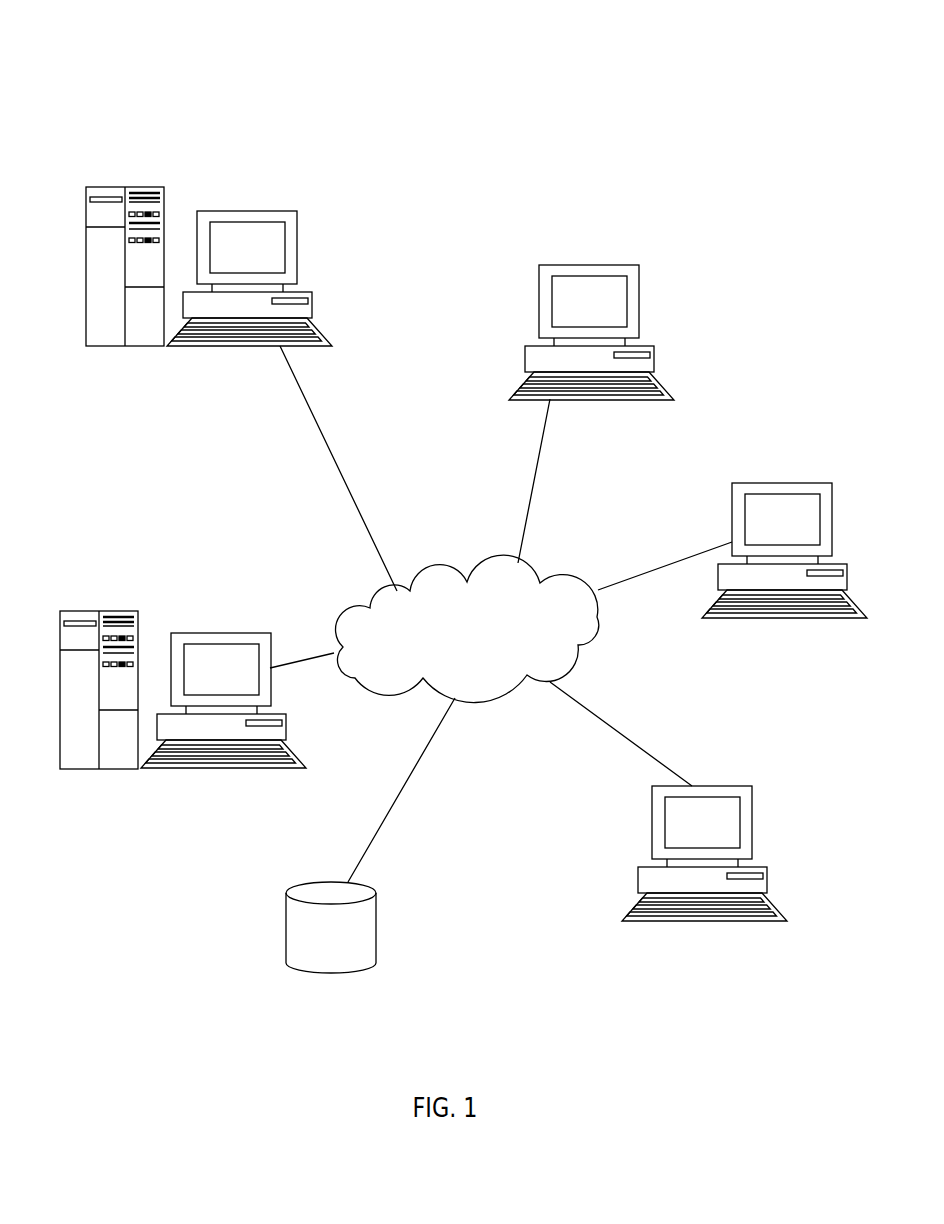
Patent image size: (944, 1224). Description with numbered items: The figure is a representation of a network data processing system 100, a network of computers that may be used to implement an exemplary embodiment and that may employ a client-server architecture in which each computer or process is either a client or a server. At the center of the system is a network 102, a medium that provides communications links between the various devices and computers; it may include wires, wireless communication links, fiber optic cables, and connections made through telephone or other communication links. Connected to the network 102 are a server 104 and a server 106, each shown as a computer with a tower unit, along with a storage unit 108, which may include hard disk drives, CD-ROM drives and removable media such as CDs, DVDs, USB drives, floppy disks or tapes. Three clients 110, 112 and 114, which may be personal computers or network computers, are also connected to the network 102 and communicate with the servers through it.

The network data processing system 100 is at (438, 32).
The network 102 is at (482, 658).
The server 104 is at (222, 633).
The server 106 is at (267, 211).
The storage unit 108 is at (376, 930).
The client 110 is at (573, 265).
The client 112 is at (760, 483).
The client 114 is at (652, 809).